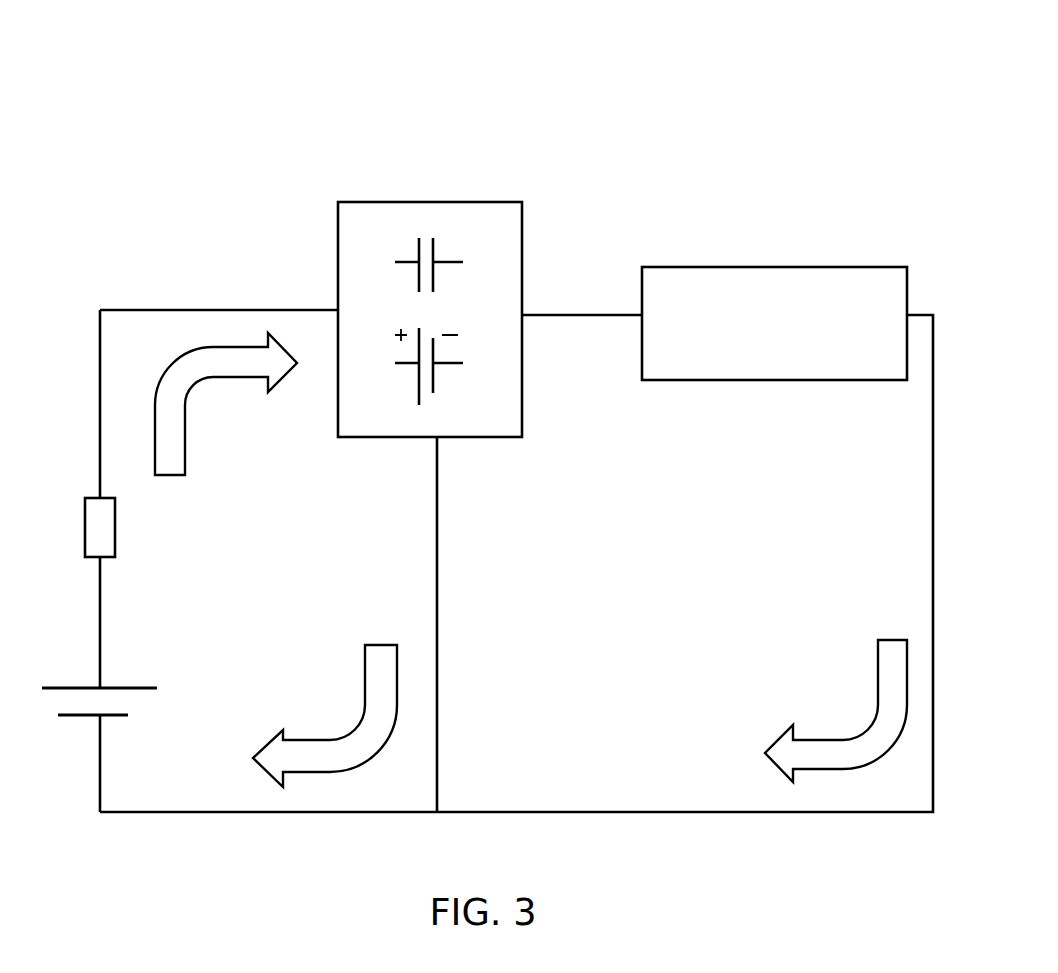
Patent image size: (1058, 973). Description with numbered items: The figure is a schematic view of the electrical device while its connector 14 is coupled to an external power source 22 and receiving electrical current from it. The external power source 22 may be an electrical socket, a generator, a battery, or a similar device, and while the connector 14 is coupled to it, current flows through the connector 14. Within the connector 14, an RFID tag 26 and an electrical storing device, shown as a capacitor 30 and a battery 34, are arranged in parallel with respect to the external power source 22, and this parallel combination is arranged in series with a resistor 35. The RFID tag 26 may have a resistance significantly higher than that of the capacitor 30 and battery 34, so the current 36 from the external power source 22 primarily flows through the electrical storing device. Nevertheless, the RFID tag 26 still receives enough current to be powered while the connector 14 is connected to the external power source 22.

The connector 14 is at (627, 123).
The external power source 22 is at (73, 688).
The RFID tag 26 is at (787, 267).
The capacitor 30 is at (412, 265).
The battery 34 is at (437, 365).
The resistor 35 is at (83, 512).
The current 36 is at (350, 733).